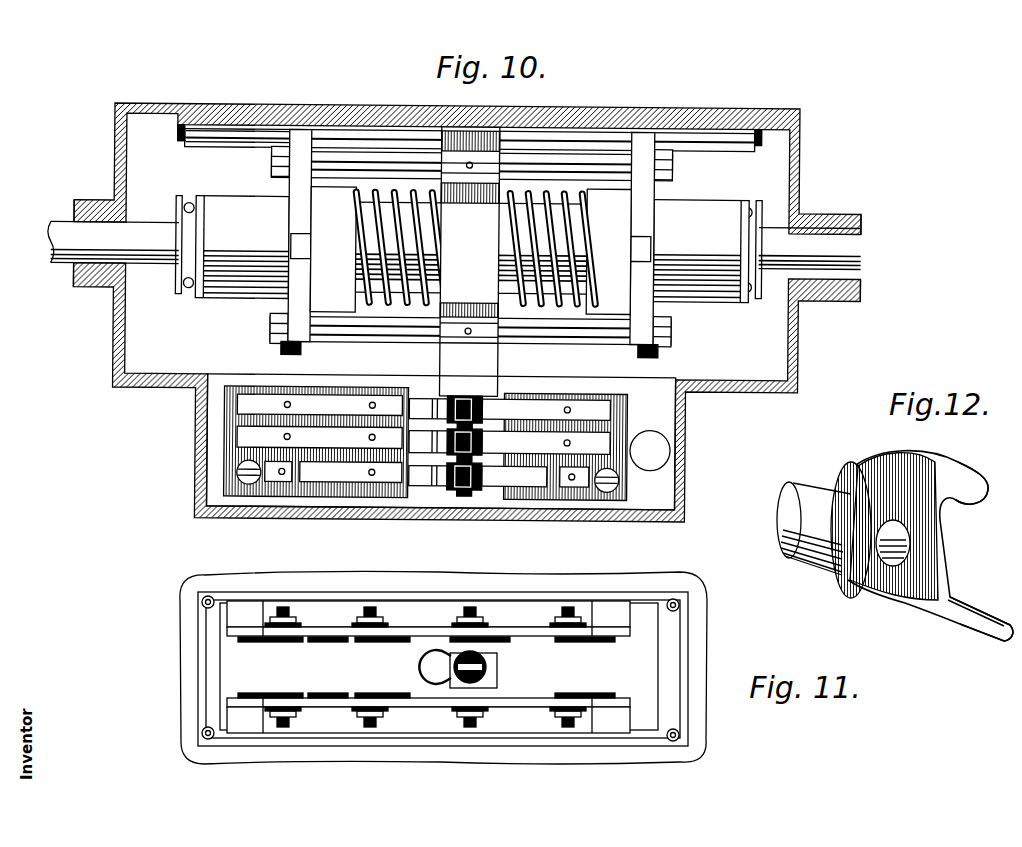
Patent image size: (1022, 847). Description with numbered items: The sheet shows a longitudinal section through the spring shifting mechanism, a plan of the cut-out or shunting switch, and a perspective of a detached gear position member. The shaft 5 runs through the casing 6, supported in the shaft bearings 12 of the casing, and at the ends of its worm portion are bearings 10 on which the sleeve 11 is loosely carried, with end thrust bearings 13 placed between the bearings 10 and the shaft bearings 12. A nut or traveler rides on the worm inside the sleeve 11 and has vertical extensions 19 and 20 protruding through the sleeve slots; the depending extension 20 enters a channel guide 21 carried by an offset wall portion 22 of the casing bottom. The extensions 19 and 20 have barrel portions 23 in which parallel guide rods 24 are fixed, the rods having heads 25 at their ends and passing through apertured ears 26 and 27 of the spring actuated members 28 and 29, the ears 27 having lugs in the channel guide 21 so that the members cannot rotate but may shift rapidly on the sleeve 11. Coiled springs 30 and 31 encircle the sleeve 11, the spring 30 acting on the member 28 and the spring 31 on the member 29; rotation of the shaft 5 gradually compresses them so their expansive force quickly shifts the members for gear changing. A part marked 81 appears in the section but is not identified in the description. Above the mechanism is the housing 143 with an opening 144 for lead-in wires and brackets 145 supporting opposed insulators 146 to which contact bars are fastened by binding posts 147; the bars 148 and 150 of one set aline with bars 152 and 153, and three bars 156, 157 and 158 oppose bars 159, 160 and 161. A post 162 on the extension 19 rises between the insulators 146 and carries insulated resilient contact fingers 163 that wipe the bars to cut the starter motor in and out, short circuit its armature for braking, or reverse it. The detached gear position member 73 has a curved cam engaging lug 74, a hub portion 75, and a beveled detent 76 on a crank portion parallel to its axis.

In FIG. 10, the shaft 5 is at (58, 226).
In FIG. 10, the casing 6 is at (802, 344).
In FIG. 10, the bearings 10 is at (190, 200).
In FIG. 10, the sleeve 11 is at (240, 200).
In FIG. 10, the shaft bearings 12 is at (97, 283).
In FIG. 10, the end thrust bearings 13 is at (191, 290).
In FIG. 10, the vertical extension 19 is at (468, 370).
In FIG. 11, the vertical extension 19 is at (500, 655).
In FIG. 10, the vertical extension 20 is at (467, 193).
In FIG. 10, the channel guide 21 is at (258, 128).
In FIG. 10, the offset wall portion 22 is at (200, 108).
In FIG. 10, the barrel portions 23 is at (492, 136).
In FIG. 10, the guide rods 24 is at (590, 165).
In FIG. 10, the heads 25 is at (283, 150).
In FIG. 10, the apertured ears 26 is at (290, 352).
In FIG. 10, the apertured ears 27 is at (303, 135).
In FIG. 10, the spring actuated member 28 is at (333, 249).
In FIG. 10, the spring actuated member 29 is at (608, 251).
In FIG. 10, the coiled spring 30 is at (410, 298).
In FIG. 10, the coiled spring 31 is at (560, 300).
In FIG. 10, the notch 81 is at (293, 238).
In FIG. 12, the reverse and second speed gear position member 73 is at (886, 476).
In FIG. 12, the cam engaging lug 74 is at (975, 478).
In FIG. 12, the hub portion 75 is at (822, 495).
In FIG. 12, the beveled detent 76 is at (974, 614).
In FIG. 10, the housing 143 is at (688, 470).
In FIG. 11, the housing 143 is at (690, 635).
In FIG. 10, the opening 144 is at (672, 440).
In FIG. 11, the brackets 145 is at (252, 603).
In FIG. 10, the insulators 146 is at (240, 460).
In FIG. 11, the insulators 146 is at (333, 603).
In FIG. 10, the binding posts 147 is at (588, 392).
In FIG. 11, the binding posts 147 is at (398, 603).
In FIG. 10, the contact bar 148 is at (546, 408).
In FIG. 10, the contact bar 150 is at (546, 441).
In FIG. 11, the contact bar 150 is at (612, 697).
In FIG. 10, the contact bar 152 is at (330, 396).
In FIG. 10, the contact bar 153 is at (319, 436).
In FIG. 11, the contact bar 153 is at (230, 695).
In FIG. 10, the contact bar 156 is at (578, 483).
In FIG. 11, the contact bar 156 is at (585, 695).
In FIG. 10, the contact bar 157 is at (351, 471).
In FIG. 11, the contact bar 157 is at (345, 695).
In FIG. 10, the contact bar 158 is at (278, 480).
In FIG. 11, the contact bar 158 is at (280, 697).
In FIG. 11, the contact bar 159 is at (590, 644).
In FIG. 11, the contact bar 160 is at (355, 643).
In FIG. 11, the contact bar 161 is at (272, 643).
In FIG. 10, the post 162 is at (467, 492).
In FIG. 11, the post 162 is at (497, 670).
In FIG. 10, the resilient contact fingers 163 is at (430, 484).
In FIG. 11, the resilient contact fingers 163 is at (413, 665).